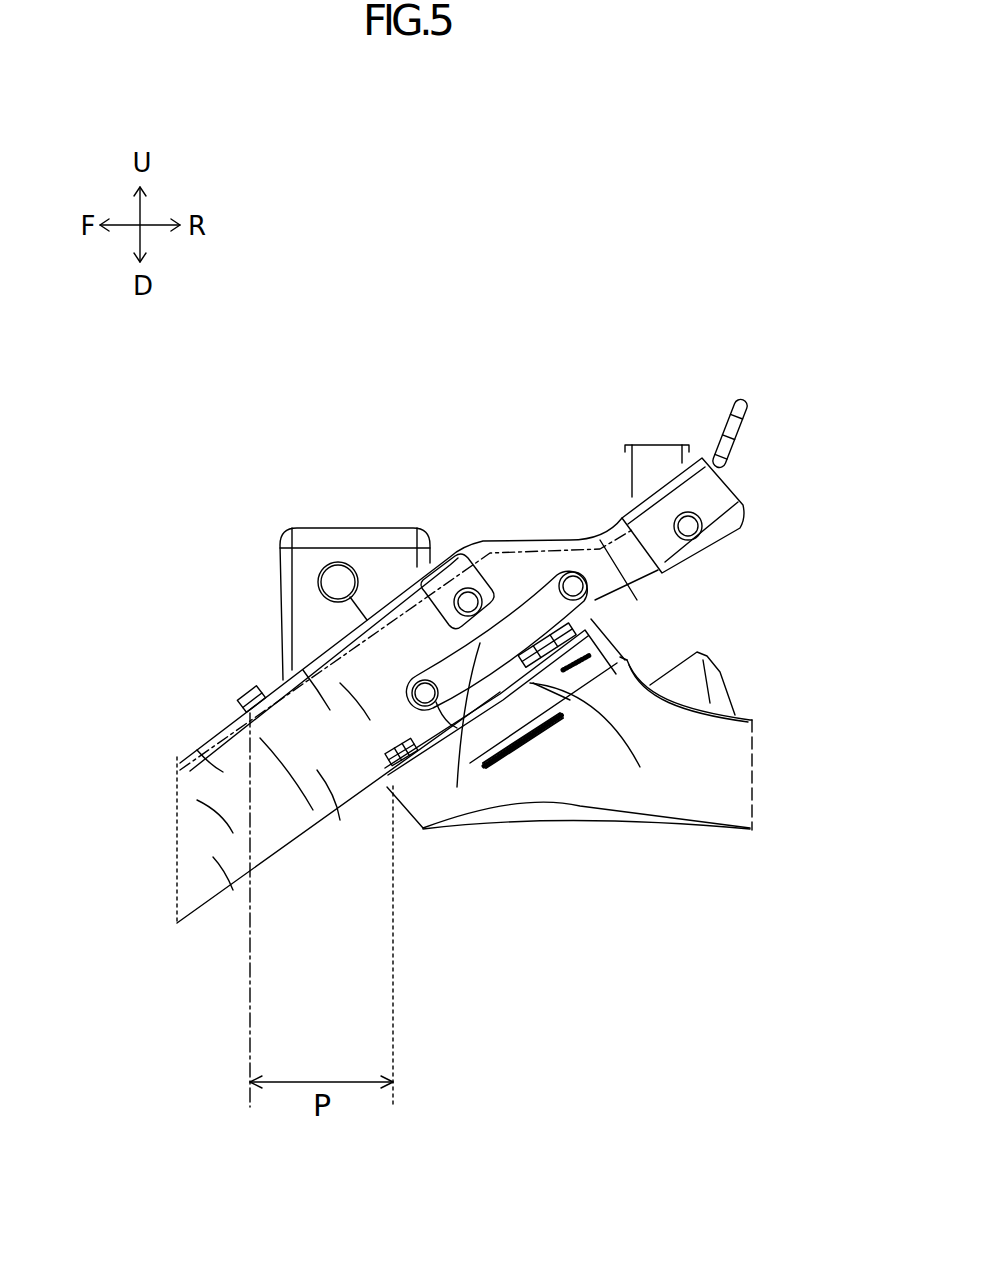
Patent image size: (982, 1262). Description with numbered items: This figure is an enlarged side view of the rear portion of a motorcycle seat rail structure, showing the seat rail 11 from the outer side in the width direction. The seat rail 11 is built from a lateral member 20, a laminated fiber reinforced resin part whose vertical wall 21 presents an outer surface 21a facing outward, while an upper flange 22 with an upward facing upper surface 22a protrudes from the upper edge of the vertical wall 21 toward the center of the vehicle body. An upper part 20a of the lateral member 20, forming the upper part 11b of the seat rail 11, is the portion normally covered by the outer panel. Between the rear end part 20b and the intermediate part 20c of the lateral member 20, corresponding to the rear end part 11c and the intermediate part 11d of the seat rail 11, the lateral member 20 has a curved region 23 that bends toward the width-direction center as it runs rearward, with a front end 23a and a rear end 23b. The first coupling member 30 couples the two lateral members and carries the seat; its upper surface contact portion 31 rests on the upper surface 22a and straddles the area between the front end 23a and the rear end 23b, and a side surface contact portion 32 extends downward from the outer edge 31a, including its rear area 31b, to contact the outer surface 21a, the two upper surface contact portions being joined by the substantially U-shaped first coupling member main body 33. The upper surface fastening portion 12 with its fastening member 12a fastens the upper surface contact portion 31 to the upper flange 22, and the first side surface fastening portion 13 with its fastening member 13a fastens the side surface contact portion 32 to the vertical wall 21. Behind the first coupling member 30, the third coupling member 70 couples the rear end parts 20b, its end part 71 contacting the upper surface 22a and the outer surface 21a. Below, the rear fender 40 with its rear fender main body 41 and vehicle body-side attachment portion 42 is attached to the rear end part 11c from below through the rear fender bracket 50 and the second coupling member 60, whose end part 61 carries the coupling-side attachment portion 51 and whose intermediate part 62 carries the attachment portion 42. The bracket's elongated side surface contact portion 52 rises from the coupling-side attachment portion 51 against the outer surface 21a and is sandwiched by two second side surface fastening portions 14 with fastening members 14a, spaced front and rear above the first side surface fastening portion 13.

The seat rail 11 is at (187, 763).
The upper part of the seat rail 11b is at (202, 748).
The rear end part of the seat rail 11c is at (678, 575).
The intermediate part of the seat rail 11d is at (188, 830).
The upper surface fastening portion 12 is at (258, 688).
The fastening member 12a is at (241, 686).
The first side surface fastening portion 13 is at (497, 567).
The fastening member 13a is at (478, 585).
The second side surface fastening portion 14 is at (403, 704).
The fastening member 14a is at (443, 787).
The lateral member 20 is at (230, 877).
The upper part of the lateral member 20a is at (193, 782).
The rear end part of the lateral member 20b is at (678, 598).
The intermediate part of the lateral member 20c is at (200, 797).
The vertical wall 21 is at (283, 797).
The outer surface 21a is at (320, 770).
The upper flange 22 is at (277, 667).
The upper surface 22a is at (230, 735).
The curved region 23 is at (337, 707).
The front end of the curved region 23a is at (223, 720).
The rear end of the curved region 23b is at (403, 800).
The first coupling member 30 is at (367, 537).
The upper surface contact portion 31 is at (340, 562).
The outer edge 31a is at (388, 592).
The rear area of the outer edge 31b is at (447, 557).
The side surface contact portion 32 is at (537, 597).
The first coupling member main body 33 is at (290, 537).
The rear fender 40 is at (713, 797).
The rear fender main body 41 is at (733, 773).
The vehicle body-side attachment portion 42 is at (700, 665).
The rear fender bracket 50 is at (537, 583).
The coupling-side attachment portion 51 is at (582, 652).
The side surface contact portion 52 is at (440, 717).
The second coupling member 60 is at (583, 712).
The end part of the second coupling member 61 is at (582, 690).
The intermediate part of the second coupling member 62 is at (515, 745).
The third coupling member 70 is at (655, 447).
The end part of the third coupling member 71 is at (697, 483).